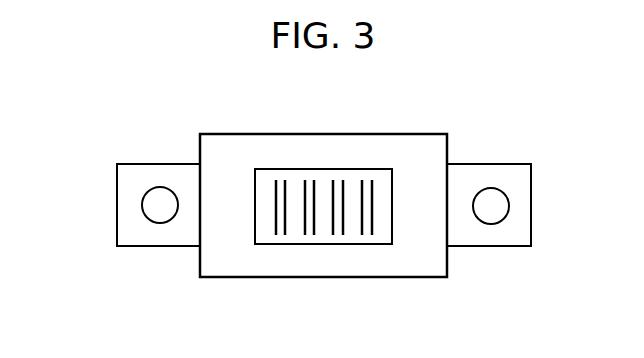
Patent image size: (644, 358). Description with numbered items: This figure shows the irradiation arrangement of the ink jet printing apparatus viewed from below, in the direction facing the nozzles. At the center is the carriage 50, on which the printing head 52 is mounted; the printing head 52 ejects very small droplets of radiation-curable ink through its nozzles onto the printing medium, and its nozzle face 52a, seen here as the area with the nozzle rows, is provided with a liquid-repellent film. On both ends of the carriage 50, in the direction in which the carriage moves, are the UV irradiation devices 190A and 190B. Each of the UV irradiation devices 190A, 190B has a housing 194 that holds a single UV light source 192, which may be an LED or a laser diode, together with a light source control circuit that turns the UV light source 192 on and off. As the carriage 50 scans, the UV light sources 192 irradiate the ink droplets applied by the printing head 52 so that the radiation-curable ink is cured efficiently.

The carriage 50 is at (397, 268).
The printing head 52 is at (337, 254).
The nozzle face 52a is at (325, 180).
The UV irradiation device 190A is at (149, 155).
The UV irradiation device 190B is at (499, 154).
The UV light source 192 is at (162, 210).
The housing 194 is at (117, 240).